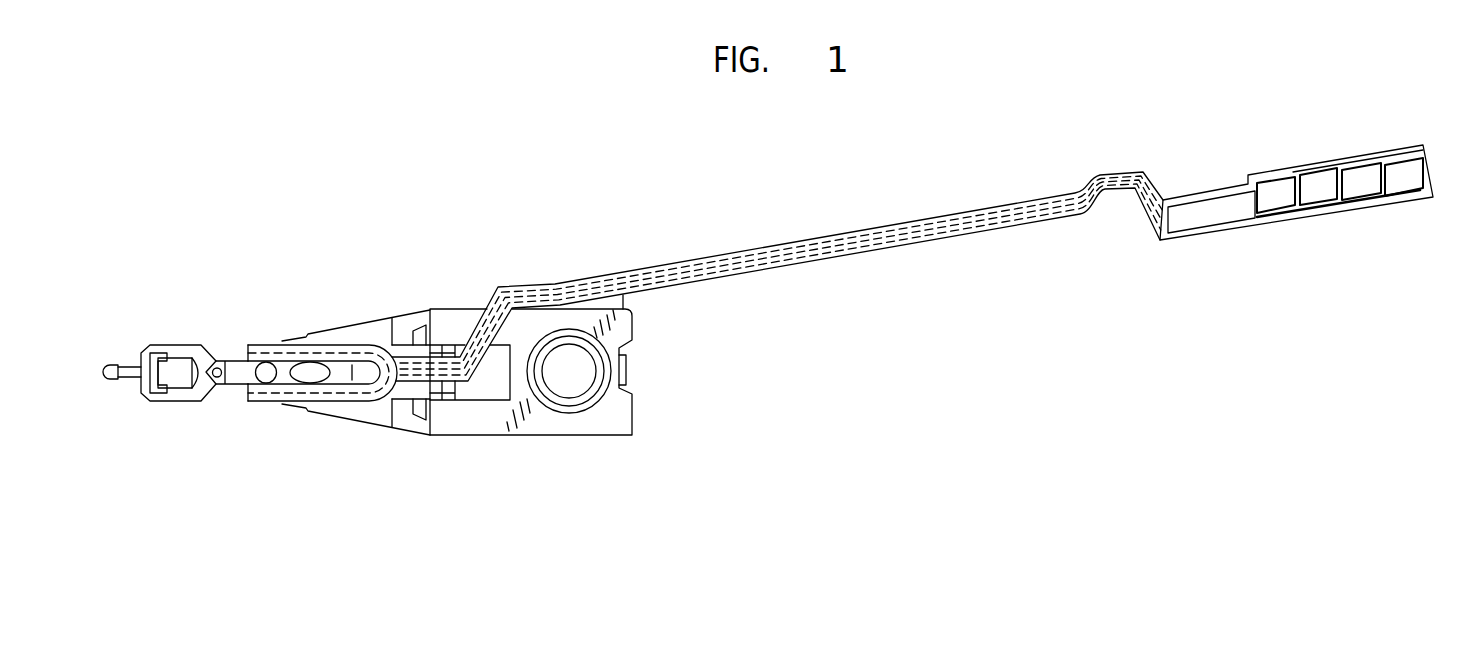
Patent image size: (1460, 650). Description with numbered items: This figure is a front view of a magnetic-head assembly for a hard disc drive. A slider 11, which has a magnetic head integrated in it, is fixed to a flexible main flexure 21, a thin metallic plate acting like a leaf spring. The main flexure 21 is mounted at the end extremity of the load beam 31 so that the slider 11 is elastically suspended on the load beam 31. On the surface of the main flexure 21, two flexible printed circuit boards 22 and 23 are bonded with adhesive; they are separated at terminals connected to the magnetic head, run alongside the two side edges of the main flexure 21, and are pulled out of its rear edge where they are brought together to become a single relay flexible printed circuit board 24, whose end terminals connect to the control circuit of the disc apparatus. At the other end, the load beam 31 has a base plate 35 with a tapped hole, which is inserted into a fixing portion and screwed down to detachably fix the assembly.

The slider 11 is at (176, 371).
The main flexure 21 is at (220, 348).
The flexible printed circuit board 22 is at (271, 347).
The flexible printed circuit board 23 is at (263, 403).
The relay flexible printed circuit board 24 is at (798, 243).
The load beam 31 is at (378, 340).
The base plate 35 is at (568, 372).